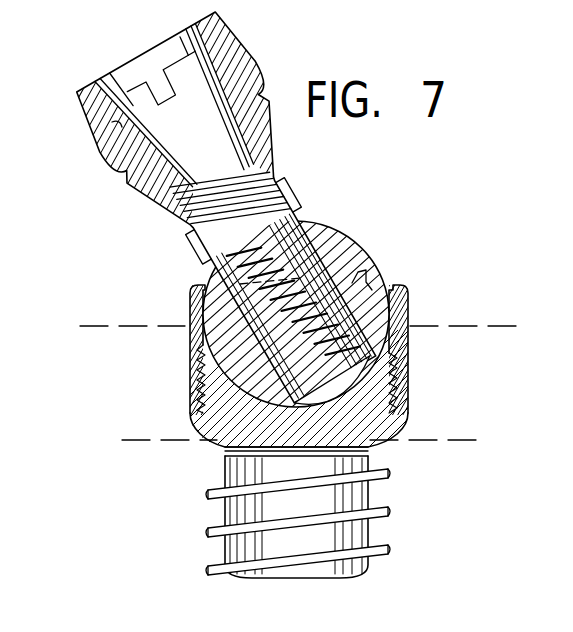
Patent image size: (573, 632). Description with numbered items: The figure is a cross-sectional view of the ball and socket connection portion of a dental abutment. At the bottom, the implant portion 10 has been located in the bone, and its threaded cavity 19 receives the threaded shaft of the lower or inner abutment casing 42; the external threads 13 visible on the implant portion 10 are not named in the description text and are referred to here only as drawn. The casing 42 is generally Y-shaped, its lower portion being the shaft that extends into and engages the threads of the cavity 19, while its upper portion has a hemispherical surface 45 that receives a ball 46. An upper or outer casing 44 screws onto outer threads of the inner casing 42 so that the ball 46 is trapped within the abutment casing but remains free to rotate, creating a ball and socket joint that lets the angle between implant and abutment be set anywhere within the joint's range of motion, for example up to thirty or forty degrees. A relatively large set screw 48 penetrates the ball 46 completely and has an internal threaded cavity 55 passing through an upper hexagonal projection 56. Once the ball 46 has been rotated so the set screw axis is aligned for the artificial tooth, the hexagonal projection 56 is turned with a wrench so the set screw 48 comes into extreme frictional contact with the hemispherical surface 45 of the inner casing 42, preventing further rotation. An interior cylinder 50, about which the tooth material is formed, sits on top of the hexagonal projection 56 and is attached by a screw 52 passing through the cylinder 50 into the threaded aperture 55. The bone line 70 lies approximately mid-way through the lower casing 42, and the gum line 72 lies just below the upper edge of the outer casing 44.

The implant portion 10 is at (200, 515).
The screw threads 13 is at (385, 548).
The threaded cavity 19 is at (270, 548).
The lower or inner abutment casing 42 is at (380, 442).
The upper or outer casing 44 is at (409, 312).
The hemispherical surface 45 is at (204, 368).
The ball 46 is at (361, 252).
The set screw 48 is at (367, 268).
The interior cylinder 50 is at (134, 167).
The screw 52 is at (112, 122).
The internal threaded cavity 55 is at (213, 258).
The upper hexagonal projection 56 is at (197, 243).
The bone line 70 is at (480, 442).
The gum line 72 is at (526, 296).